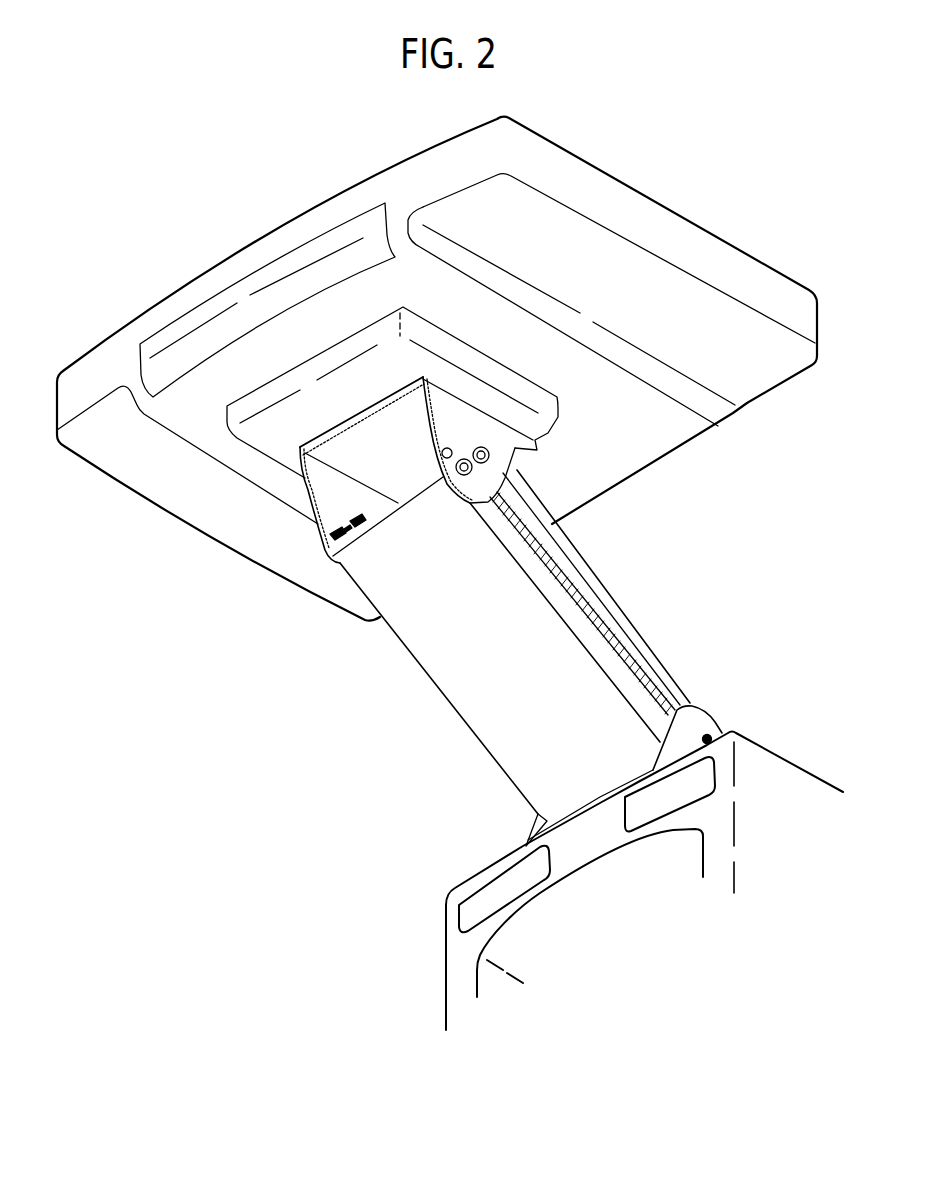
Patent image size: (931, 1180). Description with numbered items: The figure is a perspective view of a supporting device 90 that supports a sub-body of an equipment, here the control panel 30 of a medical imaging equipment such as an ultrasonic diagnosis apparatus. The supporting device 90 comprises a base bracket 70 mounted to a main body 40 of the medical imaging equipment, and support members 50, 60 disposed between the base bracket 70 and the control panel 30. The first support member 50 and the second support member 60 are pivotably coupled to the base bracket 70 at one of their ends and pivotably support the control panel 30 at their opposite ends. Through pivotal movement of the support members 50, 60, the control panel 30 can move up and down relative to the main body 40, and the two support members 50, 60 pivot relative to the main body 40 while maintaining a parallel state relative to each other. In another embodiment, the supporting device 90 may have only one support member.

The control panel 30 is at (123, 338).
The main body 40 is at (453, 970).
The first support member 50 is at (447, 677).
The second support member 60 is at (607, 612).
The base bracket 70 is at (690, 713).
The supporting device 90 is at (709, 625).